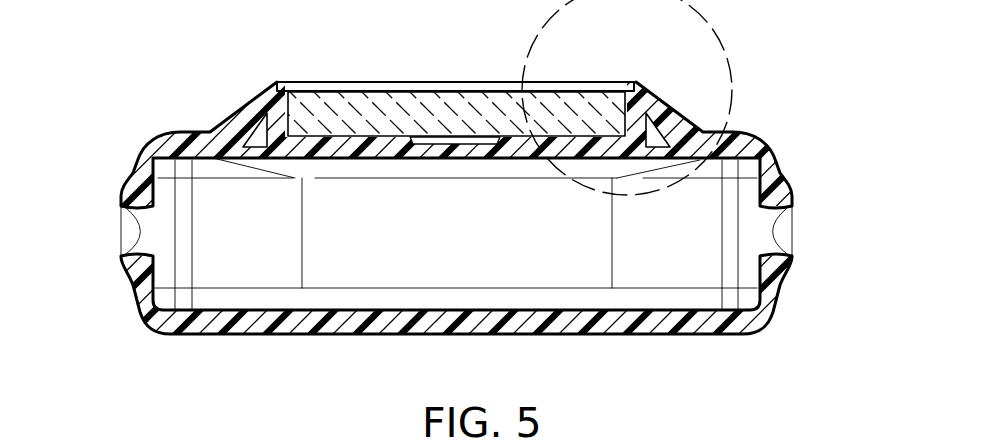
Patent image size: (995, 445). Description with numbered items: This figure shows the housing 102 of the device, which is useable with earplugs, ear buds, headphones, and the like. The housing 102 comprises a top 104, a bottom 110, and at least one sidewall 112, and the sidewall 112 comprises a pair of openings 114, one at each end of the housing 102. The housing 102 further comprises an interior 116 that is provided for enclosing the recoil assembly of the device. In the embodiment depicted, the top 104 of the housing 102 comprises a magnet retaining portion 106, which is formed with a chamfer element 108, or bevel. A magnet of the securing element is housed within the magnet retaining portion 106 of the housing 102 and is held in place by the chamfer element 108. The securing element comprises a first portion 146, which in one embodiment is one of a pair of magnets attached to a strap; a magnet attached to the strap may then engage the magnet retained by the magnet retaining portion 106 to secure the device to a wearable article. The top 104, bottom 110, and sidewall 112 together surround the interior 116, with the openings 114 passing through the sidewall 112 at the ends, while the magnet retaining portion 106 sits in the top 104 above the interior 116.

The housing 102 is at (165, 127).
The top 104 is at (728, 137).
The magnet retaining portion 106 is at (437, 80).
The chamfer element 108 is at (620, 80).
The bottom 110 is at (657, 335).
The sidewall 112 is at (783, 173).
The openings 114 is at (110, 240).
The interior 116 is at (472, 251).
The first portion 146 is at (497, 123).